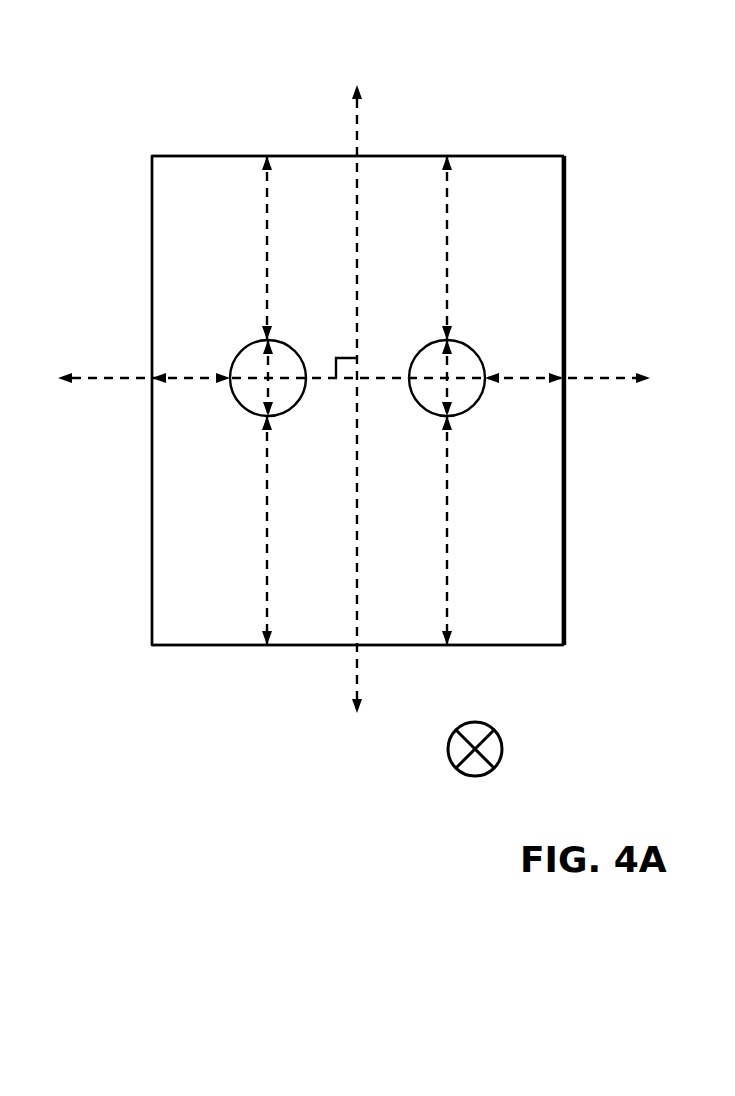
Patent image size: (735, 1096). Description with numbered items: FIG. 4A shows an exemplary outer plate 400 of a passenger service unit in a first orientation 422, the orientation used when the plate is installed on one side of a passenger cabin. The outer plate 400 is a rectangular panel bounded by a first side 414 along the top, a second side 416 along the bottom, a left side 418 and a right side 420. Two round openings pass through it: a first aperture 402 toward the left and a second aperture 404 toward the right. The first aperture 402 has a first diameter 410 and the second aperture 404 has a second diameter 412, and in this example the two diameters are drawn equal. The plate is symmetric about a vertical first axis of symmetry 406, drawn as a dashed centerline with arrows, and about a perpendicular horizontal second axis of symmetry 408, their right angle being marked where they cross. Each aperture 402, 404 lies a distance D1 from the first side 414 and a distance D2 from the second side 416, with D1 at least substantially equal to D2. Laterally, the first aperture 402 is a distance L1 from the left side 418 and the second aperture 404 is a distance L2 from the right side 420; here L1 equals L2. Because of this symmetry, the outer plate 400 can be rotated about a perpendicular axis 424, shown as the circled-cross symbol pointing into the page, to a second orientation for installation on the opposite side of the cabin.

The outer plate 400 is at (530, 605).
The first aperture 402 is at (220, 310).
The second aperture 404 is at (493, 310).
The first axis of symmetry 406 is at (393, 378).
The second axis of symmetry 408 is at (357, 188).
The first diameter 410 is at (262, 388).
The second diameter 412 is at (447, 388).
The first side 414 is at (175, 156).
The second side 416 is at (183, 645).
The left side 418 is at (152, 578).
The right side 420 is at (563, 640).
The first orientation 422 is at (255, 717).
The perpendicular axis 424 is at (502, 757).
The distance from first side D1 is at (267, 232).
The distance from second side D2 is at (267, 560).
The distance from left side L1 is at (193, 378).
The distance from right side L2 is at (522, 378).